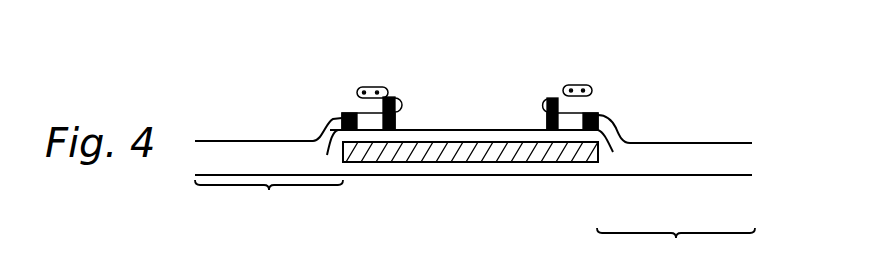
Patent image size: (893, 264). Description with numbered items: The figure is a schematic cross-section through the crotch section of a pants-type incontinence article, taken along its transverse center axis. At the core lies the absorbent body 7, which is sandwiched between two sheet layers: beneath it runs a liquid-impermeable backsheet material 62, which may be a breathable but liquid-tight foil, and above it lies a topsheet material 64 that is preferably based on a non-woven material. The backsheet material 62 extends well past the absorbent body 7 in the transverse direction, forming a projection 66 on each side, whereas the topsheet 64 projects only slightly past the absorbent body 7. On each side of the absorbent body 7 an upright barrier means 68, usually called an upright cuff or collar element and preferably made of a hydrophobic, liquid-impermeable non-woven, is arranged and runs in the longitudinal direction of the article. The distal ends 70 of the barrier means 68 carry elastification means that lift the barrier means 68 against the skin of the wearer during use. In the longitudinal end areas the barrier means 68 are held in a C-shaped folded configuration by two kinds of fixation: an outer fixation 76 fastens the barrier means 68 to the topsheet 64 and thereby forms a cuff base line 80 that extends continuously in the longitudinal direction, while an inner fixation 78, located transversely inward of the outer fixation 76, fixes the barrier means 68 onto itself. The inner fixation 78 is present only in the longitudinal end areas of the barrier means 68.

The absorbent body 7 is at (441, 148).
The backsheet material 62 is at (657, 176).
The topsheet material 64 is at (463, 128).
The projection 66 is at (475, 222).
The barrier means 68 is at (590, 86).
The distal ends 70 is at (169, 258).
The outer fixation 76 is at (341, 117).
The inner fixation 78 is at (377, 111).
The cuff base line 80 is at (598, 113).